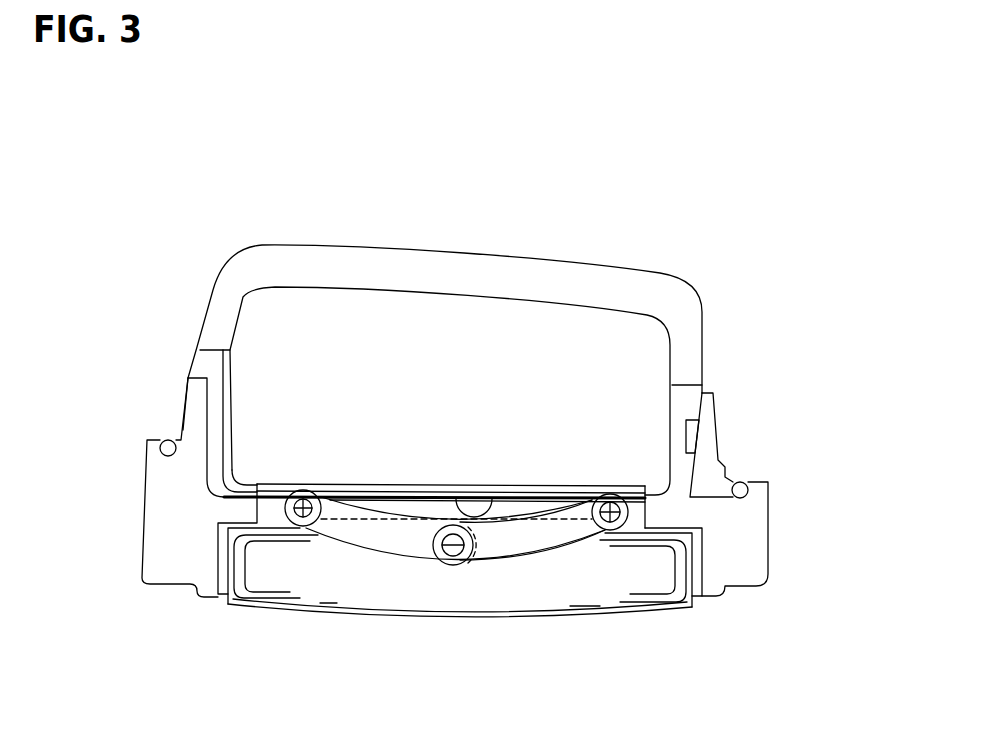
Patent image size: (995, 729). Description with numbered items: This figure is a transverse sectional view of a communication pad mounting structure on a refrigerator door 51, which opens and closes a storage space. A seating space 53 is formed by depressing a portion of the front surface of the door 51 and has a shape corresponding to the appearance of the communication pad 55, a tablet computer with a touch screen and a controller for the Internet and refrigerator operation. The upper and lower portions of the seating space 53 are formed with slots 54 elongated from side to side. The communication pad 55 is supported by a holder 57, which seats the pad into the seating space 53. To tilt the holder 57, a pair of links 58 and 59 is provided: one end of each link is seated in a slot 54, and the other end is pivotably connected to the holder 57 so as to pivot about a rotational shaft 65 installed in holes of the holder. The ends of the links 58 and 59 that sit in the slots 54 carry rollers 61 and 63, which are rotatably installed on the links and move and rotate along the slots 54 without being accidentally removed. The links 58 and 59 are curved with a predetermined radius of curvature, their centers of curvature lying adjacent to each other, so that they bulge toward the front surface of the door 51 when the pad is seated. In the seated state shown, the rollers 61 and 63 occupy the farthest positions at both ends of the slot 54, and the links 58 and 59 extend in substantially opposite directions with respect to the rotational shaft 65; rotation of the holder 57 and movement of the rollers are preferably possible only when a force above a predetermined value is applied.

The door 51 is at (476, 450).
The seating space 53 is at (232, 546).
The slot 54 is at (497, 503).
The communication pad 55 is at (230, 562).
The holder 57 is at (700, 577).
The link 58 is at (380, 538).
The link 59 is at (547, 542).
The roller 61 is at (303, 505).
The roller 63 is at (607, 522).
The rotational shaft 65 is at (453, 548).